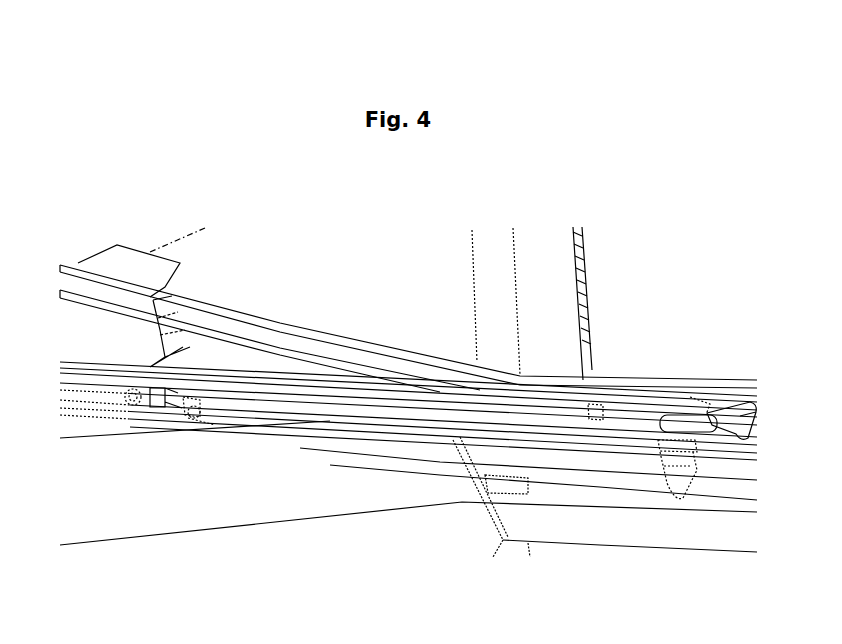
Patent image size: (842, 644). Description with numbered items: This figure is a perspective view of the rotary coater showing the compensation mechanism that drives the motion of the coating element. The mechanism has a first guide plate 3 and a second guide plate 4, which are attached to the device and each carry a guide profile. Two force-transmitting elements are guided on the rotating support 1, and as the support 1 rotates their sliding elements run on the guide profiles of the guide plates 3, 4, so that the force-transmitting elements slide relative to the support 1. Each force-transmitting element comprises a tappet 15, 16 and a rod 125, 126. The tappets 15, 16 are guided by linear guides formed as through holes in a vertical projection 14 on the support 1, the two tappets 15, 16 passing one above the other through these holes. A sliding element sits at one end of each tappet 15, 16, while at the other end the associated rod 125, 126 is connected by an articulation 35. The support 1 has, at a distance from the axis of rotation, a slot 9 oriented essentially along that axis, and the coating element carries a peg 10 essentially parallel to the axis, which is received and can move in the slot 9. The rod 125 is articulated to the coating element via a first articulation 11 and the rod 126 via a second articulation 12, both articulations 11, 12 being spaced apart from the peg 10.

The support 1 is at (488, 405).
The first guide plate 3 is at (165, 357).
The second guide plate 4 is at (110, 268).
The slot 9 is at (687, 418).
The peg 10 is at (678, 418).
The first articulation 11 is at (663, 455).
The second articulation 12 is at (703, 408).
The vertical projection 14 is at (177, 393).
The tappet 15 is at (160, 390).
The tappet 16 is at (152, 392).
The articulation 35 is at (192, 413).
The rod 125 is at (355, 425).
The rod 126 is at (570, 380).